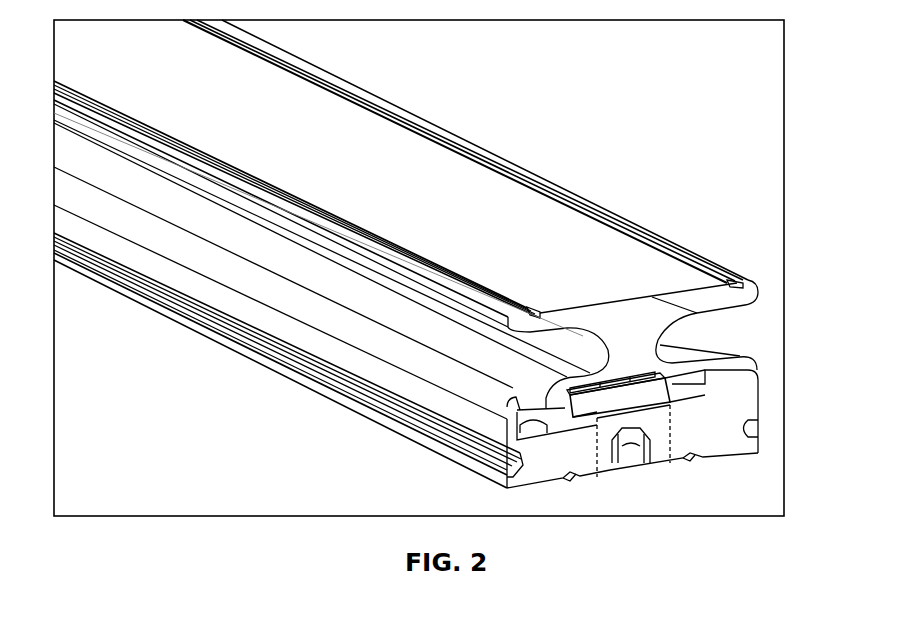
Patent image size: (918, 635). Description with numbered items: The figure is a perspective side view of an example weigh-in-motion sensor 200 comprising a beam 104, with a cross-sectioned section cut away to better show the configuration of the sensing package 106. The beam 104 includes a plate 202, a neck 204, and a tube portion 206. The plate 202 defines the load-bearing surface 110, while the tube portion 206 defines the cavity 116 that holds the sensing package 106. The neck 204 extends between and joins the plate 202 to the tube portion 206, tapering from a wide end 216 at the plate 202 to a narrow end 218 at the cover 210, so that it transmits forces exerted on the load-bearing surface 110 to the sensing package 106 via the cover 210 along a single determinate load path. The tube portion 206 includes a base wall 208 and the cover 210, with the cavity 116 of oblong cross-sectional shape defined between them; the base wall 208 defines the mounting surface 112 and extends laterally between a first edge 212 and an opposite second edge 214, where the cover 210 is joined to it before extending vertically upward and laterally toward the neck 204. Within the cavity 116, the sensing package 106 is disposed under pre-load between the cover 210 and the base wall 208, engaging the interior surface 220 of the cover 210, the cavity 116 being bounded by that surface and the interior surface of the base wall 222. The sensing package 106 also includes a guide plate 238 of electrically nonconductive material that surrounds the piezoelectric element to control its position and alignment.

The weigh-in-motion sensor 200 is at (664, 74).
The beam 104 is at (668, 326).
The load-bearing surface 110 is at (653, 303).
The cover 210 is at (540, 368).
The narrow end 218 is at (594, 358).
The plate 202 is at (733, 282).
The neck 204 is at (647, 335).
The wide end 216 is at (746, 304).
The cavity 116 is at (736, 382).
The tube portion 206 is at (770, 389).
The base wall 208 is at (752, 421).
The second edge 214 is at (757, 432).
The mounting surface 112 is at (730, 458).
The first edge 212 is at (505, 478).
The interior surface of the base wall 222 is at (560, 410).
The guide plate 238 is at (563, 392).
The sensing package 106 is at (604, 416).
The interior surface of the cover 220 is at (705, 380).